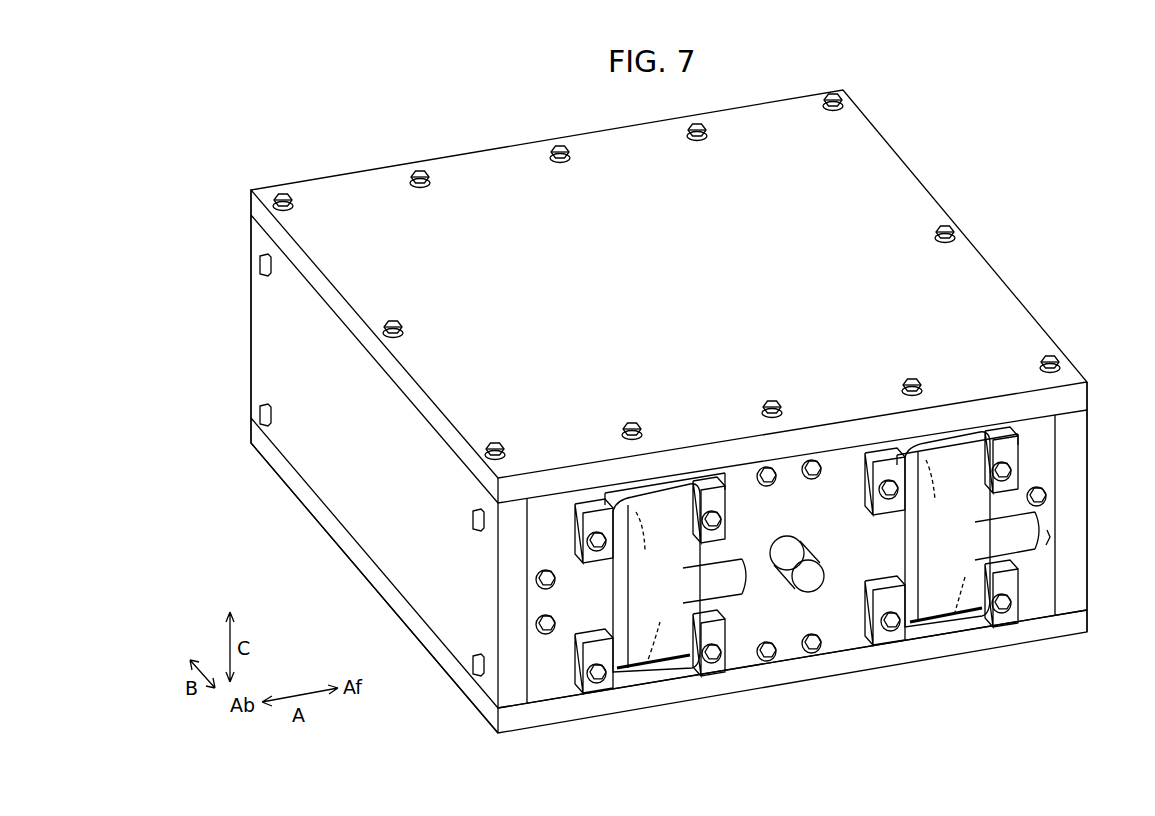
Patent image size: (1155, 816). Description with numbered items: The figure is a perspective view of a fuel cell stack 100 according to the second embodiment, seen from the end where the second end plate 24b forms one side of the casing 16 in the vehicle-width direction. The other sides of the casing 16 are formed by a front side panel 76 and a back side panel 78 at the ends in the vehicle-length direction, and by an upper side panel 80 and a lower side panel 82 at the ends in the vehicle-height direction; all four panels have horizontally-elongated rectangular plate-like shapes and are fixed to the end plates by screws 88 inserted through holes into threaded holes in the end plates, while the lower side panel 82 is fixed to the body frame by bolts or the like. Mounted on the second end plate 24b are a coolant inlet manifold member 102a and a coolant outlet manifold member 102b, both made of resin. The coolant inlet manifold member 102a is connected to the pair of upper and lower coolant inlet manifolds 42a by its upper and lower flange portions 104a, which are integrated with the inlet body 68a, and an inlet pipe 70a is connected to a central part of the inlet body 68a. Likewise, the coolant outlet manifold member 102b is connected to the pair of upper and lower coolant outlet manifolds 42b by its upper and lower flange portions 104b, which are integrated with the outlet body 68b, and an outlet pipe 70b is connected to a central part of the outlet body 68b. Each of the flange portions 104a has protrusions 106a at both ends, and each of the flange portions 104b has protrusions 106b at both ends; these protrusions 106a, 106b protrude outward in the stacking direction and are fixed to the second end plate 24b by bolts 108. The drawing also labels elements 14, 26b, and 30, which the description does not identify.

The fuel cell stack 100 is at (542, 116).
The housing case 14 is at (932, 206).
The casing 16 is at (918, 188).
The second end plate 24b is at (1043, 610).
The shaft portion 26b is at (790, 572).
The bolt 30 is at (1052, 535).
The coolant inlet manifolds 42a is at (652, 586).
The coolant outlet manifolds 42b is at (953, 536).
The inlet body 68a is at (660, 535).
The outlet body 68b is at (945, 597).
The inlet pipe 70a is at (730, 580).
The outlet pipe 70b is at (1018, 538).
The front side panel 76 is at (1075, 428).
The back side panel 78 is at (420, 590).
The upper side panel 80 is at (965, 272).
The lower side panel 82 is at (472, 698).
The screws 88 is at (698, 140).
The coolant inlet manifold member 102a is at (678, 652).
The coolant outlet manifold member 102b is at (968, 602).
The flange portions 104a is at (680, 490).
The flange portions 104b is at (972, 438).
The protrusions 106a is at (596, 530).
The protrusions 106b is at (888, 482).
The bolts 108 is at (596, 535).